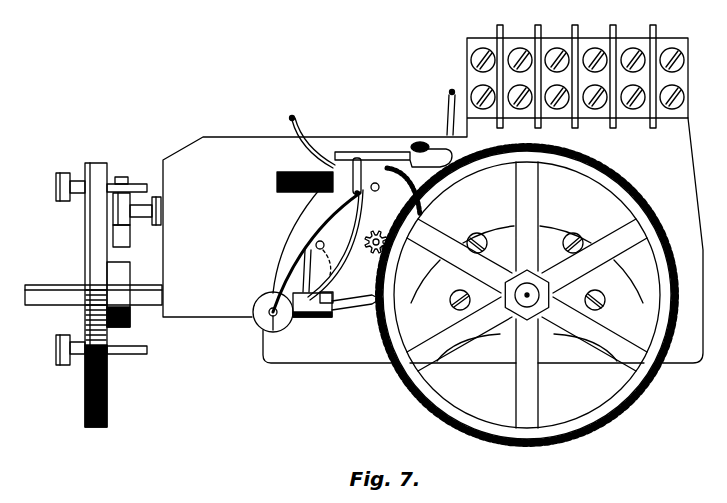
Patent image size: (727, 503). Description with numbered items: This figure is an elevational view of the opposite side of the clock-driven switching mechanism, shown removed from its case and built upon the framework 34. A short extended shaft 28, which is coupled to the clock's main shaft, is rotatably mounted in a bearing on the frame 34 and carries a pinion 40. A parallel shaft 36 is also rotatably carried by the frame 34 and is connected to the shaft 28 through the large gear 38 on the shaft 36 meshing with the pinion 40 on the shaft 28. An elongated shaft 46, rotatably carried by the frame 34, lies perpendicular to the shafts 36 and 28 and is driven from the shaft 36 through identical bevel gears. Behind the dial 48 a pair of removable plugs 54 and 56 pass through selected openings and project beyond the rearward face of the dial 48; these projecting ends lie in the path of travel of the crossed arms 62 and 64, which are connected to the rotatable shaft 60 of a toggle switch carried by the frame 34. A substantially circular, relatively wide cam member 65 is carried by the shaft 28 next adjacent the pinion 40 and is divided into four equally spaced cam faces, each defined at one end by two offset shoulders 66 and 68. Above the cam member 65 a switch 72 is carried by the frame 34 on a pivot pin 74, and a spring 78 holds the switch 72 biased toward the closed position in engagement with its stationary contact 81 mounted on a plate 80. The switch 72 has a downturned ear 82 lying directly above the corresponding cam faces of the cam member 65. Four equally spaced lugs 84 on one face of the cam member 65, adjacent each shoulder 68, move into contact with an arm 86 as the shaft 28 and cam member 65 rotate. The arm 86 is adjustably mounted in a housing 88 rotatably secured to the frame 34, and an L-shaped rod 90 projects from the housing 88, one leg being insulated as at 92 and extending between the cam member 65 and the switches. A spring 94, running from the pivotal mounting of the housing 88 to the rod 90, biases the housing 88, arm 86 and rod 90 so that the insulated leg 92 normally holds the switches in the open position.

The extended shaft 28 is at (388, 249).
The framework 34 is at (433, 194).
The shaft 36 is at (538, 293).
The large gear 38 is at (600, 420).
The pinion 40 is at (378, 231).
The elongated shaft 46 is at (50, 288).
The dial 48 is at (85, 408).
The removable plug 54 is at (56, 188).
The removable plug 56 is at (56, 355).
The rotatable shaft 60 is at (141, 218).
The crossed arm 62 is at (123, 242).
The crossed arm 64 is at (117, 205).
The cam member 65 is at (417, 300).
The offset shoulder 66 is at (335, 245).
The offset shoulder 68 is at (285, 268).
The switch 72 is at (348, 152).
The pivot pin 74 is at (449, 118).
The spring 78 is at (438, 140).
The plate 80 is at (287, 172).
The stationary contact 81 is at (333, 170).
The downturned ear 82 is at (403, 187).
The lug 84 is at (316, 240).
The arm 86 is at (347, 311).
The housing 88 is at (263, 320).
The L-shaped rod 90 is at (312, 282).
The insulated leg 92 is at (362, 158).
The spring 94 is at (288, 260).